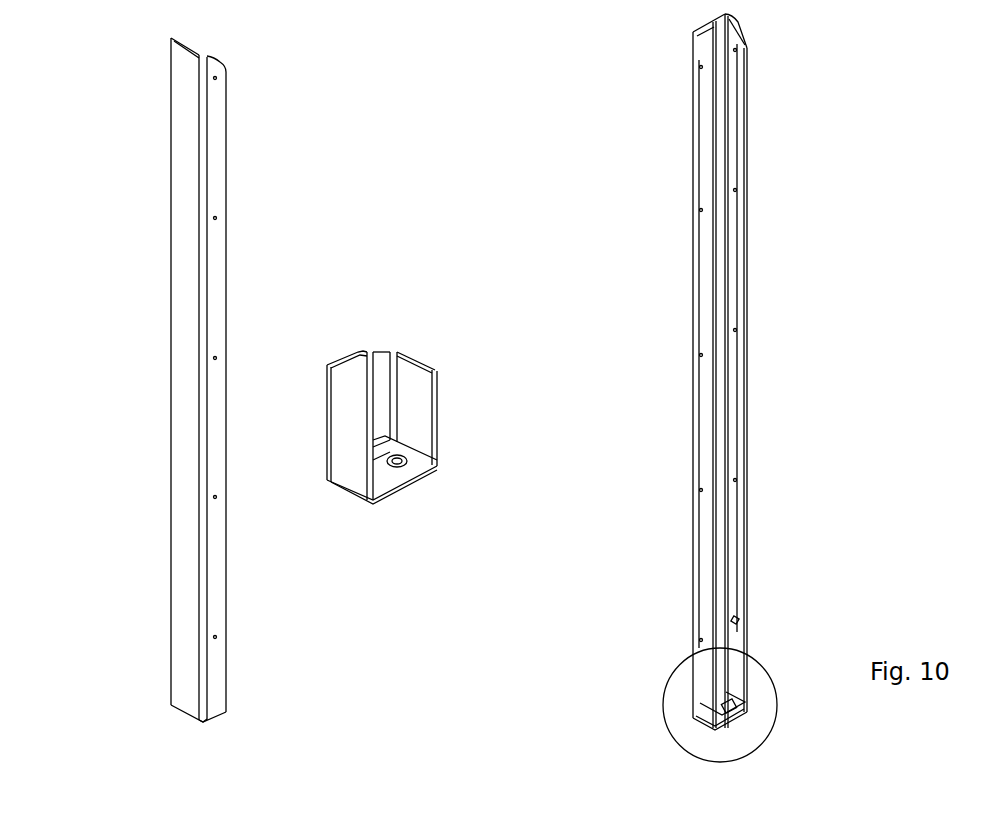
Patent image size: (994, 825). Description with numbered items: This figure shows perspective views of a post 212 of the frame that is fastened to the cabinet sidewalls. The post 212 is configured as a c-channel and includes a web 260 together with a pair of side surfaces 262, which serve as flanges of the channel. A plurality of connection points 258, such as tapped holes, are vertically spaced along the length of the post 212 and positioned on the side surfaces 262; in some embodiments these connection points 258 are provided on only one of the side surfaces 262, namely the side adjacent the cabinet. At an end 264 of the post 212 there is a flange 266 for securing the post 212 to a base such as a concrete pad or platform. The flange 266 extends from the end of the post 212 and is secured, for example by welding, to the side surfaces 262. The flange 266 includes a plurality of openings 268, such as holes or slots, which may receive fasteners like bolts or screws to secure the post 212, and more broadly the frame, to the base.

The post 212 is at (100, 80).
The connection points 258 is at (700, 66).
The web 260 is at (188, 212).
The side surfaces 262 is at (703, 183).
The end 264 is at (770, 736).
The flange 266 is at (390, 480).
The openings 268 is at (402, 464).